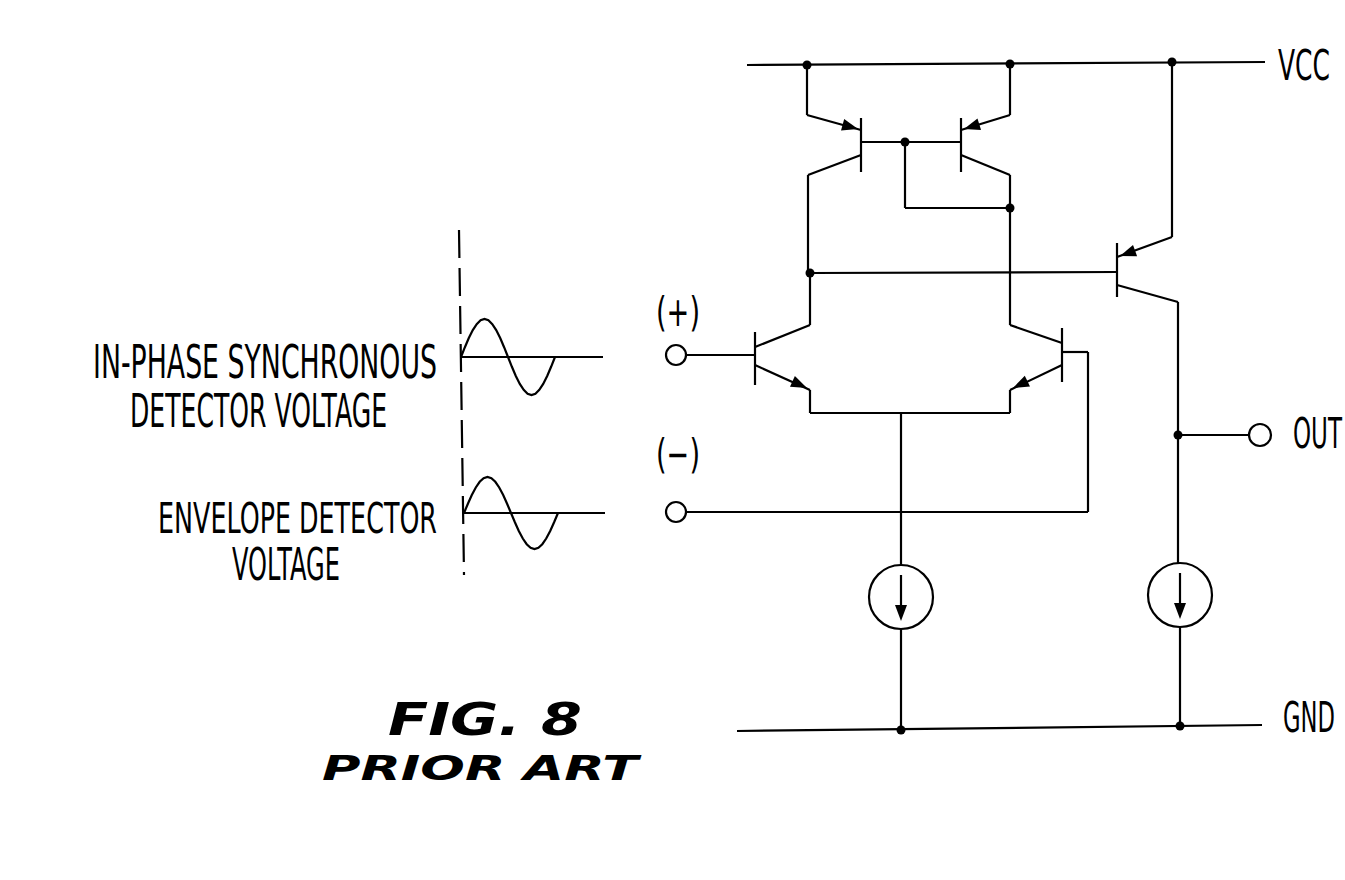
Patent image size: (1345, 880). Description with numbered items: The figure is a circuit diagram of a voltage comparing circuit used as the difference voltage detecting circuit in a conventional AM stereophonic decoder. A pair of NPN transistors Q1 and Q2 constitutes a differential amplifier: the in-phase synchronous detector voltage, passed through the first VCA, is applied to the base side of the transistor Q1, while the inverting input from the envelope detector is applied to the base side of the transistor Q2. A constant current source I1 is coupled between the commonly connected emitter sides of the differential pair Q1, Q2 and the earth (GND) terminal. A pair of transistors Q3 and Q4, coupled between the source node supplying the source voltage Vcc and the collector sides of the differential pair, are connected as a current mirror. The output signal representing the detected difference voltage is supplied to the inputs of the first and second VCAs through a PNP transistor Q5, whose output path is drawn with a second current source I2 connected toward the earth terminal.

The NPN transistor Q1 is at (803, 357).
The NPN transistor Q2 is at (1018, 357).
The transistor Q3 is at (1008, 145).
The transistor Q4 is at (810, 145).
The PNP transistor Q5 is at (1170, 269).
The constant current source I1 is at (921, 597).
The second current source I2 is at (1199, 595).